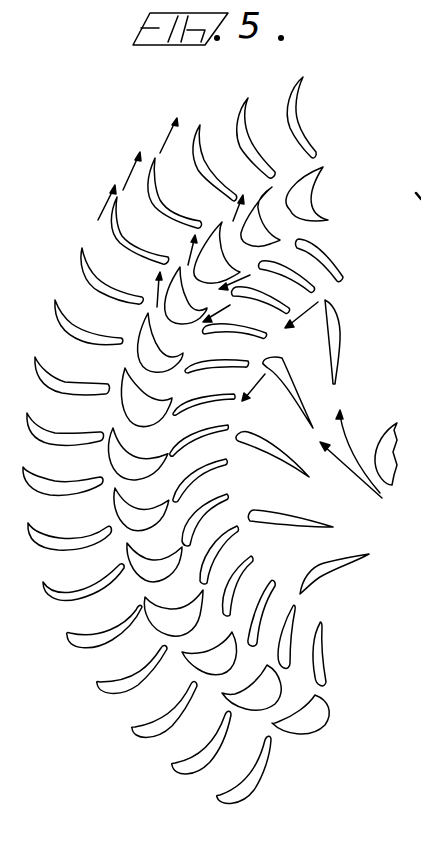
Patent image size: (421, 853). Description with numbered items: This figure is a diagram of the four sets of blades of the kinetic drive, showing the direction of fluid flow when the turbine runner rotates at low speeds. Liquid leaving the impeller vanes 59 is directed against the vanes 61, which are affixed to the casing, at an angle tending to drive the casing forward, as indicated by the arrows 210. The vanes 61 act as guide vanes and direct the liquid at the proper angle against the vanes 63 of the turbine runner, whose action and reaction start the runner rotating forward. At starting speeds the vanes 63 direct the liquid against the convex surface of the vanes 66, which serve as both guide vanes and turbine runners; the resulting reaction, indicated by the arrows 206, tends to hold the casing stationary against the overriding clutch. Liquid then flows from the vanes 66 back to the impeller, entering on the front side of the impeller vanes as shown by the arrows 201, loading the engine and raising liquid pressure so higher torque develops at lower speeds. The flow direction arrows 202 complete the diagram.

The primary air flow direction 202 is at (131, 171).
The vanes 66 is at (84, 249).
The arrows 206 is at (193, 246).
The vanes 63 is at (142, 333).
The vanes 61 is at (343, 278).
The impeller vanes 59 is at (329, 345).
The arrows 210 is at (268, 375).
The arrows 201 is at (351, 466).